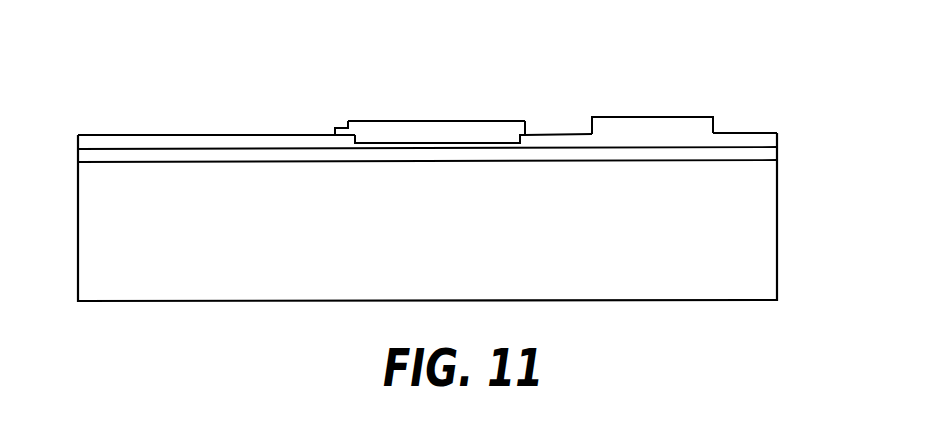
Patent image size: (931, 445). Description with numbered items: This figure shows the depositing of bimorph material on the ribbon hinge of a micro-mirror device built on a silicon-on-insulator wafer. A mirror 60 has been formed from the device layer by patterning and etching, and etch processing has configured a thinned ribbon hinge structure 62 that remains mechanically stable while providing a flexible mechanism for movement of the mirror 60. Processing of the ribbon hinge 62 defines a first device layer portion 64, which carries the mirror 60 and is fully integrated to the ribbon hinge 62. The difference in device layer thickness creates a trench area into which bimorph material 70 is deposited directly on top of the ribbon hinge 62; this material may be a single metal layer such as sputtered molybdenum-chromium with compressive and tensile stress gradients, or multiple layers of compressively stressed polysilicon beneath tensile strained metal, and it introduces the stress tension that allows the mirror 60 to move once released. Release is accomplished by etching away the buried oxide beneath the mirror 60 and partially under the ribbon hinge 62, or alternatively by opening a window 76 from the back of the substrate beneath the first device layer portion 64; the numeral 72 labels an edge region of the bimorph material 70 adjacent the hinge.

The mirror 60 is at (695, 116).
The ribbon hinge structure 62 is at (445, 144).
The first device layer portion 64 is at (755, 132).
The bimorph material 70 is at (440, 119).
The edge of overlying layer 72 is at (523, 119).
The window 76 is at (343, 125).